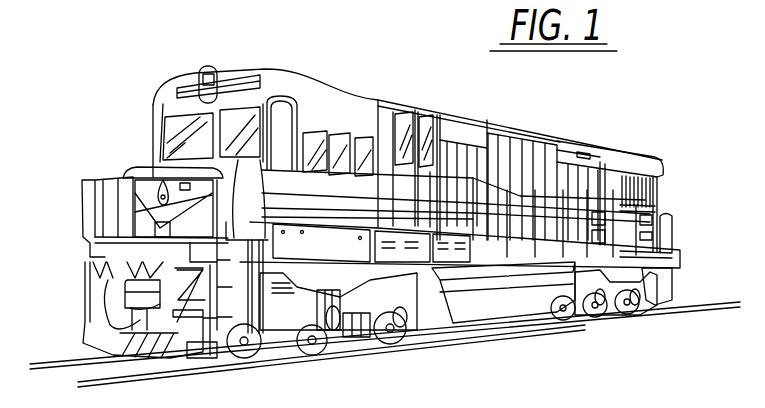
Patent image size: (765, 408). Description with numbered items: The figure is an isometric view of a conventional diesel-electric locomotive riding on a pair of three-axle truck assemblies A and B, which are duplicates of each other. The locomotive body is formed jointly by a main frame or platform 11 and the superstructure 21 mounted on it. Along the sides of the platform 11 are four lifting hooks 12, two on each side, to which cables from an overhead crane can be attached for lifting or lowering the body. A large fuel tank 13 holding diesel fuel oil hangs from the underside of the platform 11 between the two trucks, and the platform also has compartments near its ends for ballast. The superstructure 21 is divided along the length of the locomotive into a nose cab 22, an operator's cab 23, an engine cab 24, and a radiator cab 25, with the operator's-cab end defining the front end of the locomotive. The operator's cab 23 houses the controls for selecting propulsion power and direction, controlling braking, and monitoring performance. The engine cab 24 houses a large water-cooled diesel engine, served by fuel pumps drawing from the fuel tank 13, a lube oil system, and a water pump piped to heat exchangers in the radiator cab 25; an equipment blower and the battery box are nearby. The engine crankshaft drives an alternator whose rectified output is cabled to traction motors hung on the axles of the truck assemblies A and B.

The superstructure 21 is at (473, 87).
The nose cab 22 is at (143, 175).
The operator's cab 23 is at (330, 108).
The engine cab 24 is at (477, 123).
The radiator cab 25 is at (650, 178).
The main frame or platform 11 is at (423, 267).
The lifting hooks 12 is at (372, 277).
The diesel fuel tank 13 is at (518, 307).
The three-axle truck assembly A is at (292, 307).
The three-axle truck assembly B is at (617, 302).